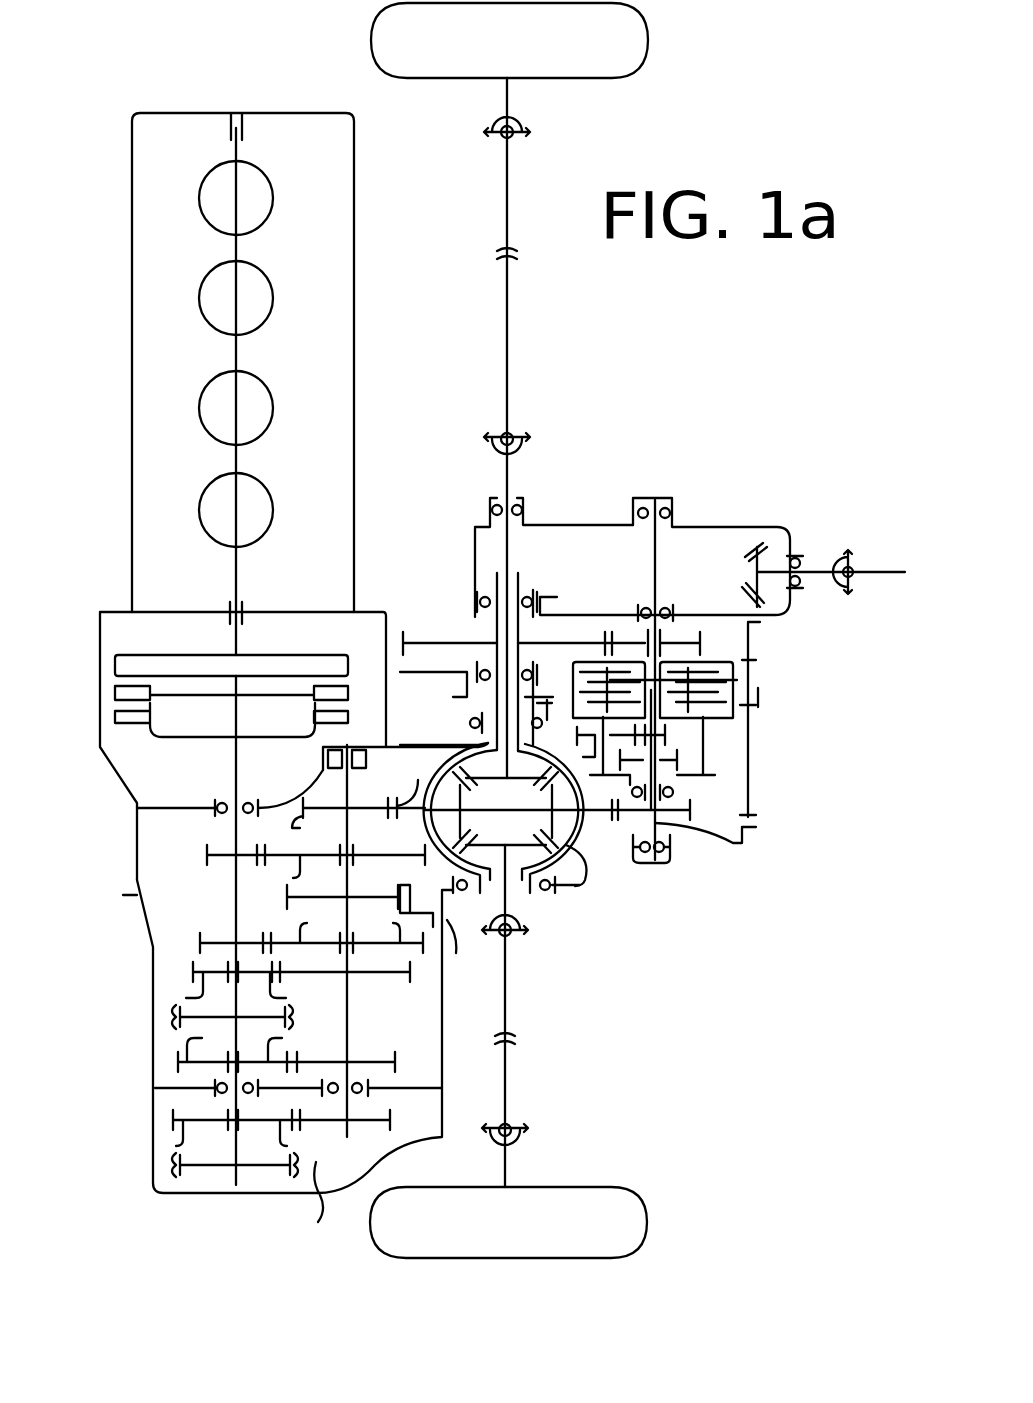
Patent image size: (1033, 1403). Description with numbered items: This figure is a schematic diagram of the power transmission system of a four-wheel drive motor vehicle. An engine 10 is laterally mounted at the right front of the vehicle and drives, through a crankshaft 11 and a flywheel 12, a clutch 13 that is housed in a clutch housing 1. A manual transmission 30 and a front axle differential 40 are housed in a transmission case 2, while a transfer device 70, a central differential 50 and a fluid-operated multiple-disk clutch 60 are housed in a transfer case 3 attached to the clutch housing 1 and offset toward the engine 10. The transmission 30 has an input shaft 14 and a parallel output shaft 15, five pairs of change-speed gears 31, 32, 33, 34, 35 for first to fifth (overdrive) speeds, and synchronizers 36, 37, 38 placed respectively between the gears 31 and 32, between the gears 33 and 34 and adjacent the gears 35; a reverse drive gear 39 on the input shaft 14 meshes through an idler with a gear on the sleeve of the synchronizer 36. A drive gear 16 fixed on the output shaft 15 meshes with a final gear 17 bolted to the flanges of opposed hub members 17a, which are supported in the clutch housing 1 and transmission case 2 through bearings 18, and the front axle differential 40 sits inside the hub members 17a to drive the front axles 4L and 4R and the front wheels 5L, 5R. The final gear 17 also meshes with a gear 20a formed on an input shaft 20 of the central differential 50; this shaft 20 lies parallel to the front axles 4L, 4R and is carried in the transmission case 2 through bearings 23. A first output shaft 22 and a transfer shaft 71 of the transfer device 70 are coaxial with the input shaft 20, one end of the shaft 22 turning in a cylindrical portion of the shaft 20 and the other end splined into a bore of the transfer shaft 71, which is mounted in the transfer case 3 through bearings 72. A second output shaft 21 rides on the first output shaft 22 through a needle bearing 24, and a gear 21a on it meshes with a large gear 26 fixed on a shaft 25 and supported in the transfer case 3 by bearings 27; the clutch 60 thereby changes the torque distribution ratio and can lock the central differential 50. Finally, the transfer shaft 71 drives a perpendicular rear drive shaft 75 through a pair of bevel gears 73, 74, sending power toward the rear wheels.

The engine 10 is at (132, 412).
The crankshaft 11 is at (234, 582).
The clutch housing 1 is at (103, 700).
The flywheel 12 is at (140, 668).
The clutch 13 is at (117, 713).
The input shaft 14 is at (236, 772).
The transmission case 2 is at (137, 878).
The manual transmission 30 is at (374, 1068).
The reverse drive gear 39 is at (293, 931).
The output shaft 15 is at (347, 1020).
The drive gear 16 is at (358, 824).
The final gear 17 is at (414, 775).
The hub member 17a is at (582, 885).
The bearing 18 is at (470, 723).
The first speed gear 31 is at (207, 845).
The second speed gear 32 is at (200, 943).
The third speed gear 33 is at (193, 972).
The fourth speed gear 34 is at (178, 1062).
The fifth speed gear 35 is at (173, 1120).
The synchronizer 36 is at (287, 883).
The synchronizer 37 is at (172, 1015).
The synchronizer 38 is at (172, 1165).
The front axle differential 40 is at (548, 893).
The front axle 4R is at (507, 326).
The front axle 4L is at (505, 1007).
The right front wheel 5R is at (632, 62).
The left front wheel 5L is at (622, 1201).
The transfer case 3 is at (712, 526).
The transfer device 70 is at (603, 547).
The bearing 72 is at (672, 500).
The bevel gear 73 is at (558, 606).
The transfer shaft 71 is at (660, 580).
The bevel gear 74 is at (760, 545).
The rear drive shaft 75 is at (826, 562).
The needle bearing 24 is at (648, 641).
The shaft 25 is at (497, 627).
The gear 26 is at (403, 630).
The bearing 27 is at (475, 560).
The second output shaft 21 is at (752, 626).
The gear 21a is at (703, 628).
The fluid-operated multiple-disk clutch 60 is at (758, 690).
The first output shaft 22 is at (660, 743).
The central differential 50 is at (736, 767).
The input shaft 20 is at (707, 843).
The gear 20a is at (740, 848).
The bearing 23 is at (672, 861).